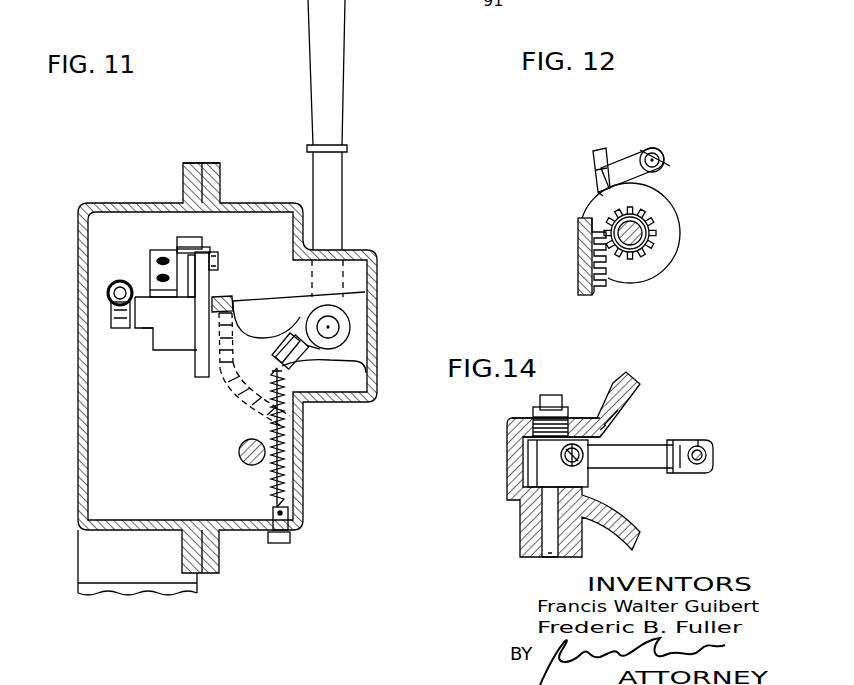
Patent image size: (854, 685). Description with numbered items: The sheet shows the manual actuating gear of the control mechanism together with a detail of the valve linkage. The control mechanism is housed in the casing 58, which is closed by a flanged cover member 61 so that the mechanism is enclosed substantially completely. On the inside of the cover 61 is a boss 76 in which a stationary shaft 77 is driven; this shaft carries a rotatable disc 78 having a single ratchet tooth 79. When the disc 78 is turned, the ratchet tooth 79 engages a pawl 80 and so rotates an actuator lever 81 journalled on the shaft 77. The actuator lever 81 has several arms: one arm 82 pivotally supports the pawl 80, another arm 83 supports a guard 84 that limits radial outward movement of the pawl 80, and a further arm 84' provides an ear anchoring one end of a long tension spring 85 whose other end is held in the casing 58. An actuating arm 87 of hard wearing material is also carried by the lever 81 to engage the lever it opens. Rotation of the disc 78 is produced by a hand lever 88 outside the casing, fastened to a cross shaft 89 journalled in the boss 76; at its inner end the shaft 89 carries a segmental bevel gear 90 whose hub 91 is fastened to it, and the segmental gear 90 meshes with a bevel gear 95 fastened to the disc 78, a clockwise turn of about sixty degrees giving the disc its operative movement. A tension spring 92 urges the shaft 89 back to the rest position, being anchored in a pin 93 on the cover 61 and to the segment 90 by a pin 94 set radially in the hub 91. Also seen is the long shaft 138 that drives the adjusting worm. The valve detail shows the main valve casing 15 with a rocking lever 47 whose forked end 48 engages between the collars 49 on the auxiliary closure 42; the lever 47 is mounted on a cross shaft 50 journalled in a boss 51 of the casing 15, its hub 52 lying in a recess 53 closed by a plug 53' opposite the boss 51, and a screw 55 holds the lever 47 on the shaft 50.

In FIG. 11, the control mechanism casing 58 is at (122, 202).
In FIG. 11, the flanged cover member 61 is at (258, 205).
In FIG. 11, the hand lever 88 is at (343, 176).
In FIG. 11, the actuating arm 87 is at (152, 252).
In FIG. 11, the arm 83 is at (185, 267).
In FIG. 12, the arm 83 is at (597, 168).
In FIG. 11, the arm 82 is at (185, 237).
In FIG. 12, the arm 82 is at (661, 172).
In FIG. 11, the pawl 80 is at (196, 300).
In FIG. 12, the pawl 80 is at (629, 166).
In FIG. 11, the guard 84 is at (233, 249).
In FIG. 12, the guard 84 is at (581, 161).
In FIG. 11, the arm 84' is at (130, 356).
In FIG. 11, the tension spring 85 is at (108, 300).
In FIG. 11, the actuator lever 81 is at (176, 344).
In FIG. 12, the actuator lever 81 is at (661, 143).
In FIG. 11, the boss 76 is at (258, 297).
In FIG. 11, the bevel gear 95 is at (216, 291).
In FIG. 11, the rotatable disc 78 is at (198, 380).
In FIG. 12, the rotatable disc 78 is at (680, 232).
In FIG. 11, the segmental bevel gear 90 is at (244, 407).
In FIG. 12, the segmental bevel gear 90 is at (580, 292).
In FIG. 11, the pin 94 is at (299, 337).
In FIG. 11, the cross shaft 89 is at (330, 327).
In FIG. 11, the hub 91 is at (343, 312).
In FIG. 11, the long shaft 138 is at (240, 460).
In FIG. 11, the tension spring 92 is at (280, 462).
In FIG. 11, the pin 93 is at (290, 538).
In FIG. 12, the stationary shaft 77 is at (650, 241).
In FIG. 12, the ratchet tooth 79 is at (598, 193).
In FIG. 14, the cross shaft 50 is at (550, 525).
In FIG. 14, the boss 51 is at (523, 550).
In FIG. 14, the main valve casing 15 is at (624, 373).
In FIG. 14, the recess 53 is at (527, 438).
In FIG. 14, the plug 53' is at (533, 408).
In FIG. 14, the hub 52 is at (530, 472).
In FIG. 14, the screw 55 is at (556, 470).
In FIG. 14, the rocking lever 47 is at (630, 446).
In FIG. 14, the auxiliary closure 42 is at (717, 453).
In FIG. 14, the forked end 48 is at (705, 438).
In FIG. 14, the collars 49 is at (713, 458).